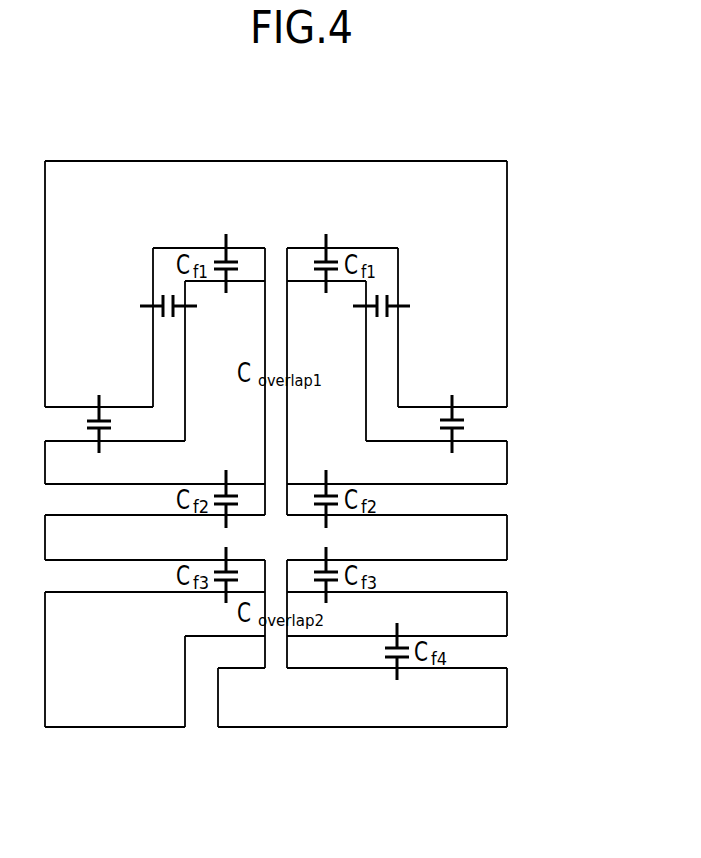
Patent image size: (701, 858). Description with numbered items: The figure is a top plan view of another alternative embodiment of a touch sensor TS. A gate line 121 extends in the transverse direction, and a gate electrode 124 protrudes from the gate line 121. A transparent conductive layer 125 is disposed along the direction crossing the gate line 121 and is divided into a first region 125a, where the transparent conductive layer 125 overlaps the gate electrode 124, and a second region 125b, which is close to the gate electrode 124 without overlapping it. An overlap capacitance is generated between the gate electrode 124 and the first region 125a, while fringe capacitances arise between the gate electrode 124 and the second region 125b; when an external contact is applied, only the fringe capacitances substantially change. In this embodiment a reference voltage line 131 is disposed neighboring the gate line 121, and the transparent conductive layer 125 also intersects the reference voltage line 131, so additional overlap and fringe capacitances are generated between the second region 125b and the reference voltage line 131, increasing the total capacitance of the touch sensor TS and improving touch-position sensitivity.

The touch sensor TS is at (534, 158).
The transparent conductive layer 125 is at (337, 338).
The first region 125a is at (275, 331).
The second region 125b is at (493, 245).
The gate electrode 124 is at (348, 366).
The gate line 121 is at (493, 461).
The reference voltage line 131 is at (493, 613).